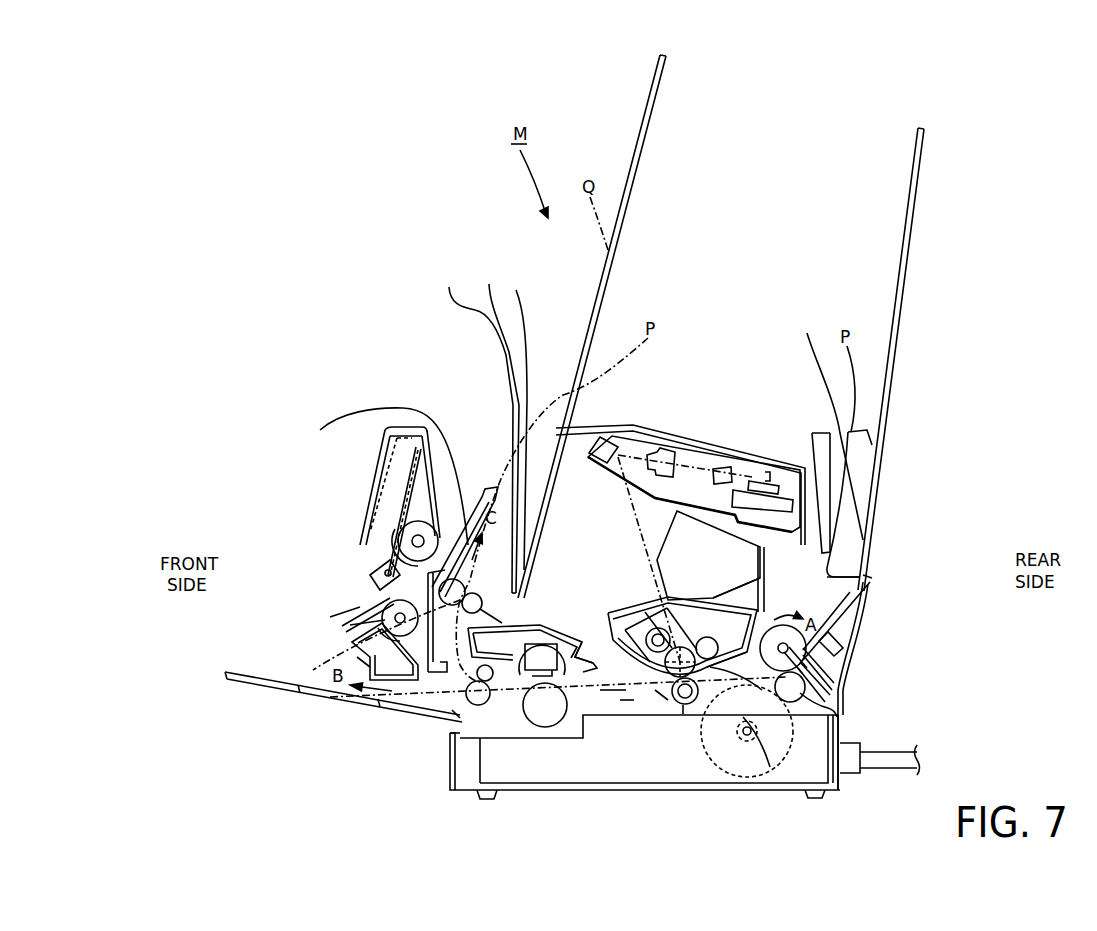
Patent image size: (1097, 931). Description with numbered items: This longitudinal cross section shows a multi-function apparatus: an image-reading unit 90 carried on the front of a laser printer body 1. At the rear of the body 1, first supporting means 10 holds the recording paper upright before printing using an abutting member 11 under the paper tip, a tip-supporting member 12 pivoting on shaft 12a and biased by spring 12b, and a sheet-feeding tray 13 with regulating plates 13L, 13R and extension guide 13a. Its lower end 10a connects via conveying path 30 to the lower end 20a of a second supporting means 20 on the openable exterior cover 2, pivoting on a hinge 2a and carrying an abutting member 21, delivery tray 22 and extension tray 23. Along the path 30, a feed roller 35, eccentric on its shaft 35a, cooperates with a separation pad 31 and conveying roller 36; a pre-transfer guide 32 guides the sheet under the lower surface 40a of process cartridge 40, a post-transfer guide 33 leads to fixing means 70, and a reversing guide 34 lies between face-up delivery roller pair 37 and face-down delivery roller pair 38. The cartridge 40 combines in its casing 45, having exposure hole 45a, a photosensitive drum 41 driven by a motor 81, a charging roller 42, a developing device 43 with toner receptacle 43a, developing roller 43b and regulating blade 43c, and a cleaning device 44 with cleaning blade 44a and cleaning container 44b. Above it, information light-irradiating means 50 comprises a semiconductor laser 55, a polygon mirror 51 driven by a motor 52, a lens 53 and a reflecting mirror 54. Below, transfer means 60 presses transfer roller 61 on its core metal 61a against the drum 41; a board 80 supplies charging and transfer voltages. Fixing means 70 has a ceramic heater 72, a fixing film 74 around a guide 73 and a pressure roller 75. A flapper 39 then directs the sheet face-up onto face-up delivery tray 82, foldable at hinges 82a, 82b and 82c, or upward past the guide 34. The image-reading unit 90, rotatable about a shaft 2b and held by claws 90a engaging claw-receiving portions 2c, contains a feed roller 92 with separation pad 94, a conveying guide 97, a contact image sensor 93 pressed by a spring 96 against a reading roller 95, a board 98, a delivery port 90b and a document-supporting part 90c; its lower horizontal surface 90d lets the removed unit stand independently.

The printer body 1 is at (831, 425).
The exterior cover 2 is at (466, 518).
The hinge 2a is at (450, 668).
The shaft 2b is at (497, 487).
The claw-receiving portions 2c is at (455, 665).
The first supporting means 10 is at (948, 447).
The lower end of first supporting means 10a is at (853, 672).
The abutting member 11 is at (848, 657).
The tip-supporting member 12 is at (852, 600).
The shaft 12a is at (867, 572).
The spring 12b is at (842, 640).
The sheet-feeding tray 13 is at (884, 462).
The extension guide 13a is at (895, 360).
The movable regulating plate 13L is at (866, 490).
The movable regulating plate 13R is at (888, 504).
The second supporting means 20 is at (563, 257).
The lower end of second supporting means 20a is at (472, 428).
The abutting member 21 is at (498, 427).
The delivery tray 22 is at (516, 420).
The extension tray 23 is at (579, 365).
The conveying path 30 is at (615, 710).
The separation pad 31 is at (846, 670).
The pre-transfer guide 32 is at (757, 690).
The post-transfer guide 33 is at (628, 707).
The reversing guide 34 is at (450, 665).
The feed roller 35 is at (840, 704).
The shaft 35a is at (848, 686).
The conveying roller 36 is at (838, 722).
The F/U delivery roller pair 37 is at (460, 735).
The F/D delivery roller pair 38 is at (447, 660).
The flapper 39 is at (444, 695).
The process cartridge 40 is at (663, 710).
The lower surface of process cartridge 40a is at (760, 767).
The photosensitive drum 41 is at (661, 700).
The charging roller 42 is at (608, 612).
The developing device 43 is at (807, 558).
The toner receptacle 43a is at (740, 561).
The developing roller 43b is at (722, 620).
The regulating blade 43c is at (713, 600).
The cleaning device 44 is at (559, 582).
The cleaning blade 44a is at (625, 618).
The cleaning container 44b is at (622, 643).
The cartridge casing 45 is at (646, 630).
The hole 45a is at (633, 587).
The information light-irradiating means 50 is at (798, 374).
The polygon mirror 51 is at (757, 480).
The motor 52 is at (772, 478).
The lens 53 is at (662, 450).
The reflecting mirror 54 is at (618, 440).
The semiconductor laser 55 is at (723, 467).
The transfer means 60 is at (738, 826).
The transfer roller 61 is at (688, 707).
The core metal 61a is at (686, 704).
The fixing means 70 is at (617, 840).
The ceramic heater 72 is at (560, 712).
The guide 73 is at (545, 700).
The fixing film 74 is at (515, 707).
The pressure roller 75 is at (572, 700).
The board 80 is at (484, 799).
The motor 81 is at (773, 793).
The face-up delivery tray 82 is at (240, 681).
The hinge 82a is at (448, 705).
The hinge 82b is at (378, 700).
The hinge 82c is at (297, 690).
The image-reading unit 90 is at (275, 413).
The claws 90a is at (352, 641).
The delivery port 90b is at (350, 625).
The part of image-reading unit 90c is at (325, 426).
The lower horizontal surface 90d is at (357, 657).
The feed roller 92 is at (420, 530).
The contact image sensor 93 is at (365, 585).
The separation pad 94 is at (410, 540).
The reading roller 95 is at (365, 607).
The spring 96 is at (395, 570).
The conveying guide 97 is at (400, 550).
The board 98 is at (402, 465).